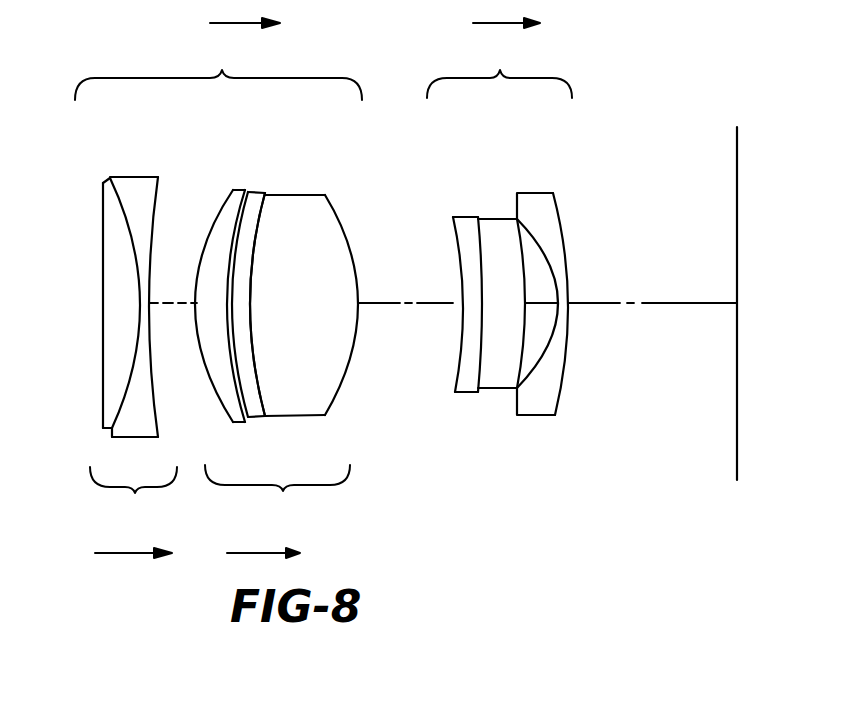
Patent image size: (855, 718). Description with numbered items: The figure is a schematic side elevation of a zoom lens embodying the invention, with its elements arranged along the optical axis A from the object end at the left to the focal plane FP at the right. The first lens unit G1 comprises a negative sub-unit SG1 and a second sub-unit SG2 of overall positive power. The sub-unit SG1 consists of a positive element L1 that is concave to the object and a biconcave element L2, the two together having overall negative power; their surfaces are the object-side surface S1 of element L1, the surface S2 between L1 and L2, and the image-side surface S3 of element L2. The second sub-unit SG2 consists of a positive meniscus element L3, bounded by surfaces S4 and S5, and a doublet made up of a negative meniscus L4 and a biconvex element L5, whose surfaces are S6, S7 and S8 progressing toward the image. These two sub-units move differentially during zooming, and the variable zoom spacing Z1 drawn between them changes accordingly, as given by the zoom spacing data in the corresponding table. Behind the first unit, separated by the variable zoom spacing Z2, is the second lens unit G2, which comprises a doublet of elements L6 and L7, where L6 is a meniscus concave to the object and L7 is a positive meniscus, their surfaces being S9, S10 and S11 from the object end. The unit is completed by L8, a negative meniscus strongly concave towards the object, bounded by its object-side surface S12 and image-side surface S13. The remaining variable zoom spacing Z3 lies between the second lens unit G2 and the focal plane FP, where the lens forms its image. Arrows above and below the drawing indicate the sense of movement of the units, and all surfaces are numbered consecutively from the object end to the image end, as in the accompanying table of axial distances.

The positive element L1 is at (104, 185).
The biconcave element L2 is at (142, 183).
The positive meniscus element L3 is at (230, 197).
The negative meniscus L4 is at (291, 193).
The biconvex element L5 is at (325, 207).
The meniscus L6 is at (463, 215).
The positive meniscus L7 is at (498, 218).
The negative meniscus L8 is at (545, 197).
The lens surface S1 is at (103, 336).
The lens surface S2 is at (133, 365).
The lens surface S3 is at (160, 403).
The lens surface S4 is at (210, 378).
The lens surface S5 is at (242, 382).
The lens surface S6 is at (257, 373).
The lens surface S7 is at (252, 325).
The lens surface S8 is at (358, 330).
The lens surface S9 is at (457, 391).
The lens surface S10 is at (480, 357).
The lens surface S11 is at (525, 283).
The lens surface S12 is at (552, 330).
The lens surface S13 is at (567, 362).
The first lens unit G1 is at (218, 73).
The second lens unit G2 is at (499, 71).
The negative sub-unit SG1 is at (133, 491).
The second sub-unit SG2 is at (277, 490).
The variable zoom spacing Z1 is at (173, 293).
The variable zoom spacing Z2 is at (405, 293).
The variable zoom spacing Z3 is at (652, 292).
The optical axis A is at (708, 301).
The focal plane FP is at (737, 278).